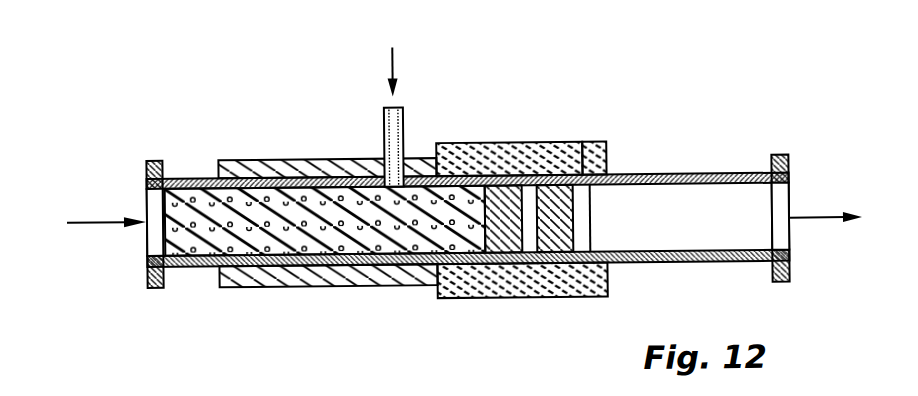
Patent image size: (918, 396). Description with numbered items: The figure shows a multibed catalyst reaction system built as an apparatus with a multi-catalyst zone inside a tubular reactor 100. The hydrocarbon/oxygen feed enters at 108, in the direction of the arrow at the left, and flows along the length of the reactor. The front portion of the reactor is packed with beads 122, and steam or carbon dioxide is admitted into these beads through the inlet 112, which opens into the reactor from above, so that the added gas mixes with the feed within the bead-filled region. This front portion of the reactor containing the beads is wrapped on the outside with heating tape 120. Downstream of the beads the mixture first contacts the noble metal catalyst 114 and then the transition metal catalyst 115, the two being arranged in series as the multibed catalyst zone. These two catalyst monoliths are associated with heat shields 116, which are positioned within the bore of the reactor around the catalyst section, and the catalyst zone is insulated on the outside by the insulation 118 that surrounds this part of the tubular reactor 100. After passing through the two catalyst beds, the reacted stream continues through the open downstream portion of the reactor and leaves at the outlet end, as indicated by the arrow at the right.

The tubular reactor 100 is at (657, 172).
The feed inlet 108 is at (90, 223).
The steam or CO2 inlet 112 is at (383, 114).
The noble metal catalyst 114 is at (529, 176).
The transition metal catalyst 115 is at (583, 176).
The heat shields 116 is at (510, 248).
The insulation 118 is at (463, 298).
The heating tape 120 is at (328, 275).
The beads 122 is at (213, 233).